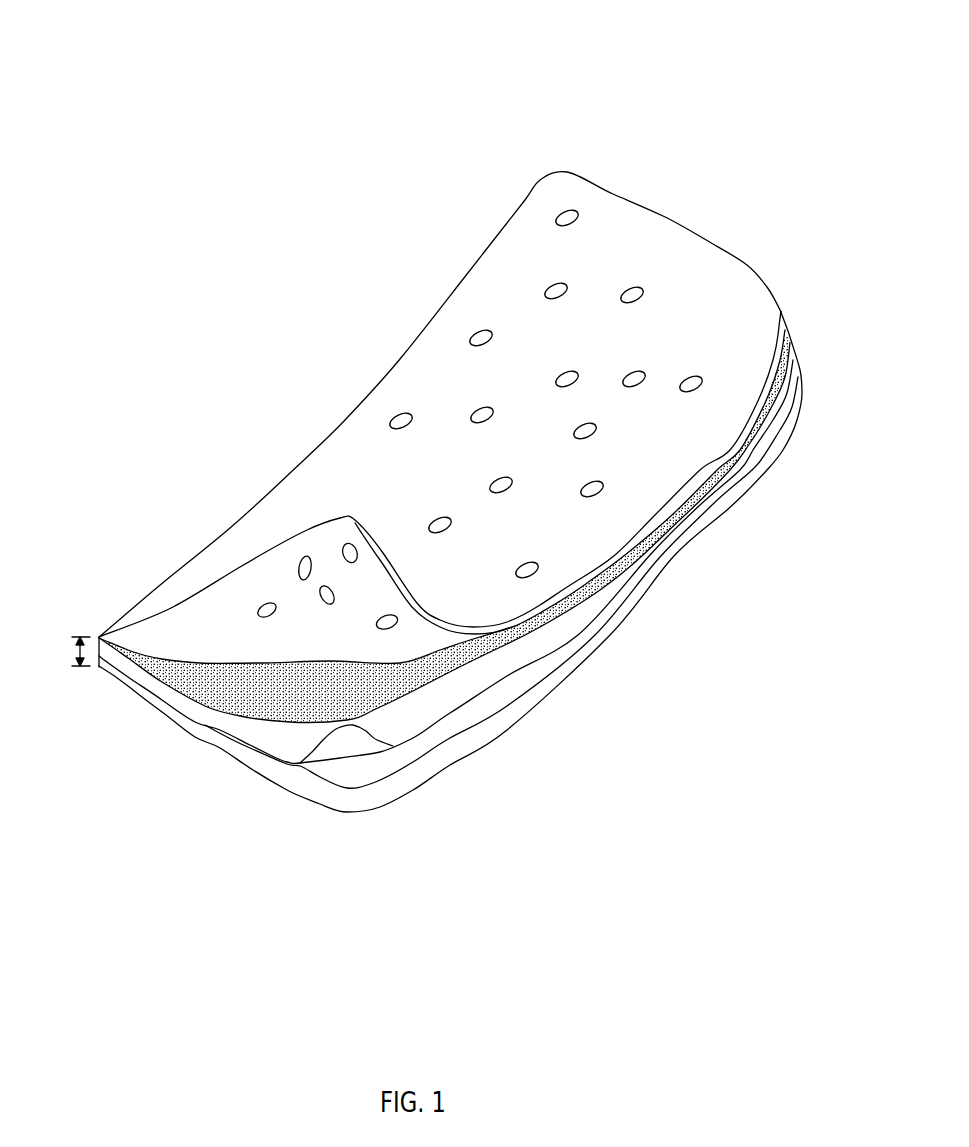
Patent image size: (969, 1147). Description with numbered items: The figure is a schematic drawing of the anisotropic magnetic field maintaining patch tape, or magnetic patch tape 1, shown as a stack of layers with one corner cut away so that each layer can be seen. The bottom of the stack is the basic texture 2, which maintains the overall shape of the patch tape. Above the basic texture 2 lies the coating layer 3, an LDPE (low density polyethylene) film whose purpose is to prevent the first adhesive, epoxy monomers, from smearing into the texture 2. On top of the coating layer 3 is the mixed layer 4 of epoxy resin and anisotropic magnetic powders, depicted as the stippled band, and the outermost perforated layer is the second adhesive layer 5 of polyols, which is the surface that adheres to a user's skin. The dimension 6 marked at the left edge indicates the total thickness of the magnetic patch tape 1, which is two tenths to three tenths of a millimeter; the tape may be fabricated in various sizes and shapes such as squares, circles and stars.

The magnetic patch tape 1 is at (767, 167).
The basic texture 2 is at (418, 772).
The coating layer 3 is at (330, 753).
The mixed layer 4 is at (480, 648).
The second adhesive layer 5 is at (370, 517).
The thickness 6 is at (68, 651).